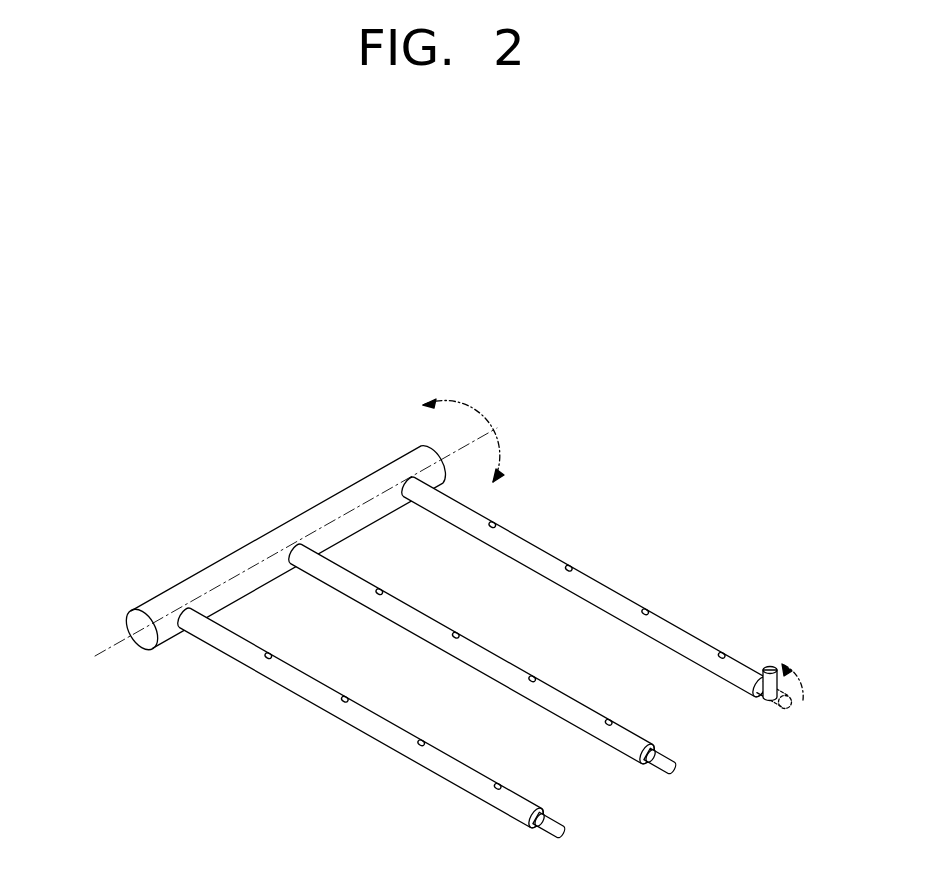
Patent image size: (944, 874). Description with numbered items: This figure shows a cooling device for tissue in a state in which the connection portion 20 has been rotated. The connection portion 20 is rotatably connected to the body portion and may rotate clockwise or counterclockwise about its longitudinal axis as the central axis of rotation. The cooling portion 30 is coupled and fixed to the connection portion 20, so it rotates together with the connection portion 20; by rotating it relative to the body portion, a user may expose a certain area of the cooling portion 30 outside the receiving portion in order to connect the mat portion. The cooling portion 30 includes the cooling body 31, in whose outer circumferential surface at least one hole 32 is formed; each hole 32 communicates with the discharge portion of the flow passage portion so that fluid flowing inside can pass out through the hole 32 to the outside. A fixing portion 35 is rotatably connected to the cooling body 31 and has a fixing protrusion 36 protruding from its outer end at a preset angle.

The connection portion 20 is at (330, 505).
The cooling portion 30 is at (490, 663).
The cooling body 31 is at (632, 608).
The hole 32 is at (496, 789).
The fixing portion 35 is at (757, 673).
The fixing protrusion 36 is at (783, 651).